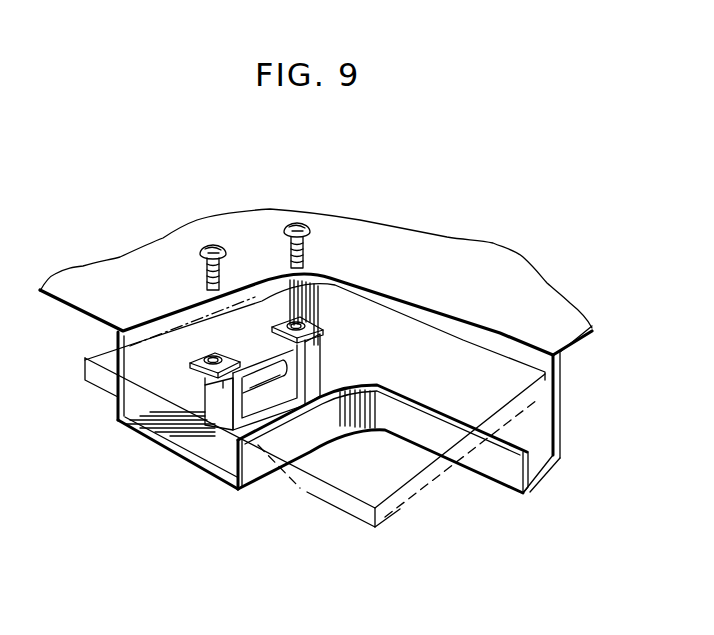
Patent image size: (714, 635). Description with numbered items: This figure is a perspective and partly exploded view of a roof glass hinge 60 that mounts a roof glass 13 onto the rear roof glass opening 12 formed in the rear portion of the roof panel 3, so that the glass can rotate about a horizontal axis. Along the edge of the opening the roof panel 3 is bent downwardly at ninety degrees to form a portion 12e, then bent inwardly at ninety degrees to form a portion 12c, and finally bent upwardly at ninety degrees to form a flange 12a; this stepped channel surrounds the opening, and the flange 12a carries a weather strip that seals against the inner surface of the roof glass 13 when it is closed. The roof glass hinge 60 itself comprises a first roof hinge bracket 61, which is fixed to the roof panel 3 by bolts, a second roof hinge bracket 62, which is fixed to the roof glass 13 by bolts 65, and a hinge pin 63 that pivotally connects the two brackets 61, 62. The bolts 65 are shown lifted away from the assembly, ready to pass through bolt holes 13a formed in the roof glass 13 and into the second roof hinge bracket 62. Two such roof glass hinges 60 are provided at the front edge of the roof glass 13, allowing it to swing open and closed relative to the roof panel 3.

The roof panel 3 is at (525, 298).
The rear roof glass opening 12 is at (484, 497).
The flange 12a is at (483, 464).
The portion 12c is at (547, 476).
The portion 12e is at (562, 397).
The roof glass 13 is at (353, 487).
The bolt holes 13a is at (290, 314).
The roof glass hinge 60 is at (200, 403).
The first roof hinge bracket 61 is at (290, 380).
The second roof hinge bracket 62 is at (322, 328).
The hinge pin 63 is at (267, 372).
The bolts 65 is at (203, 278).